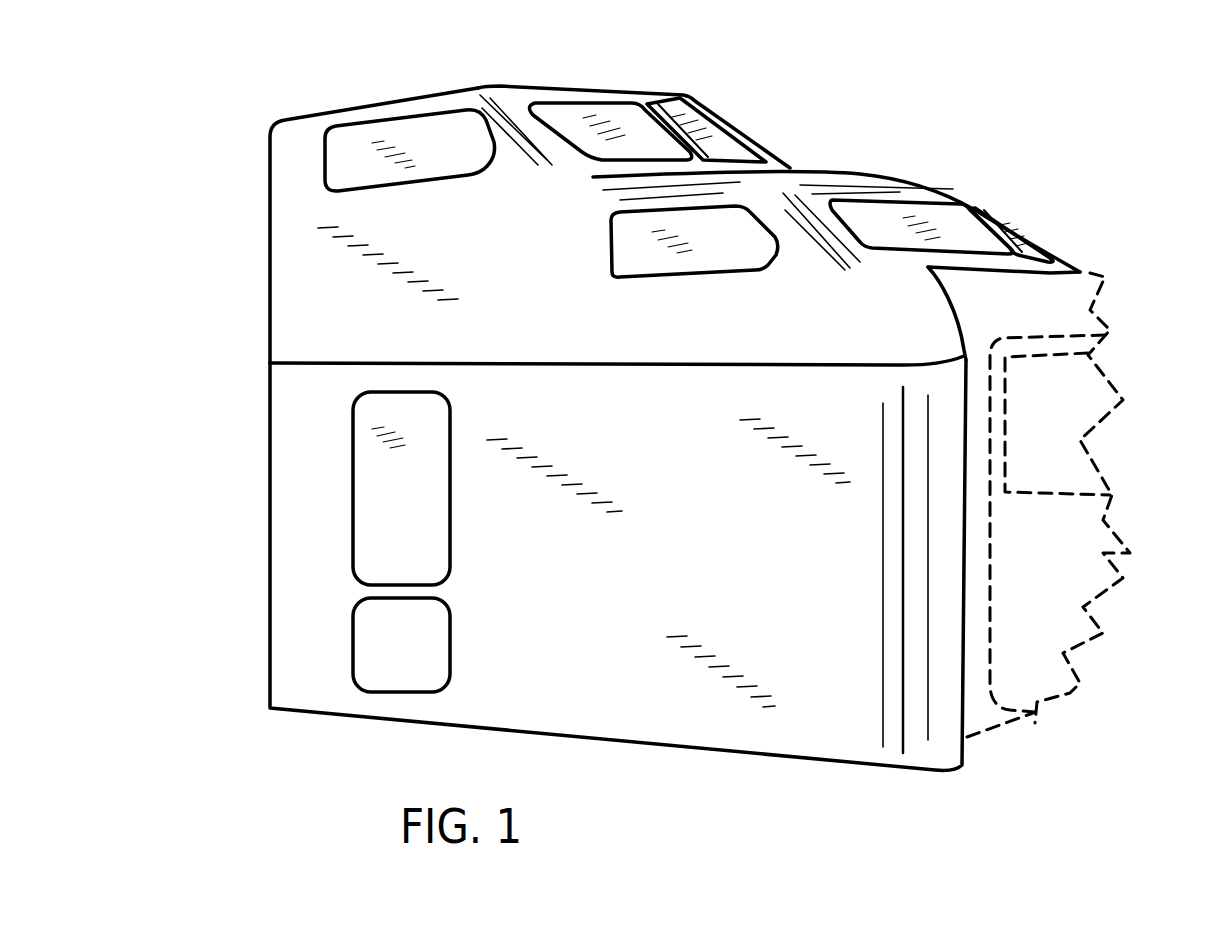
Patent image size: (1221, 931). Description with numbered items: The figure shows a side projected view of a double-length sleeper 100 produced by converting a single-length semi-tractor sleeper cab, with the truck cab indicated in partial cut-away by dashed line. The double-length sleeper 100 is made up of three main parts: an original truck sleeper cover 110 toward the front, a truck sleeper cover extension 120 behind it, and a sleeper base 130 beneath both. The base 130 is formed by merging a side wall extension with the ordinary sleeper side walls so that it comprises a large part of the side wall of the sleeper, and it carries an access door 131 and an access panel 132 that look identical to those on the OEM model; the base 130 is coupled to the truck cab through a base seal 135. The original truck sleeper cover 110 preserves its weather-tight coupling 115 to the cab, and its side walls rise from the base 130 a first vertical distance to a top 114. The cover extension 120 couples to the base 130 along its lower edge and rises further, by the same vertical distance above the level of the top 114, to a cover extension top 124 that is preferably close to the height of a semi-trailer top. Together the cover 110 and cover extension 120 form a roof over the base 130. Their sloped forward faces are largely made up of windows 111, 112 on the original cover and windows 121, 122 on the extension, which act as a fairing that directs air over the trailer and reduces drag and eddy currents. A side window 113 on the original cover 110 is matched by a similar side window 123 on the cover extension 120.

The double-length sleeper 100 is at (200, 99).
The original truck sleeper cover 110 is at (980, 191).
The window 111 is at (873, 208).
The window 112 is at (1018, 232).
The side window 113 is at (627, 257).
The top of original truck sleeper cover 114 is at (810, 172).
The weather-tight coupling 115 is at (1050, 273).
The truck sleeper cover extension 120 is at (513, 82).
The window 121 is at (575, 115).
The window 122 is at (715, 140).
The side window 123 is at (357, 138).
The cover extension top 124 is at (378, 102).
The sleeper base 130 is at (262, 478).
The access door 131 is at (368, 474).
The access panel 132 is at (365, 648).
The base seal 135 is at (968, 745).